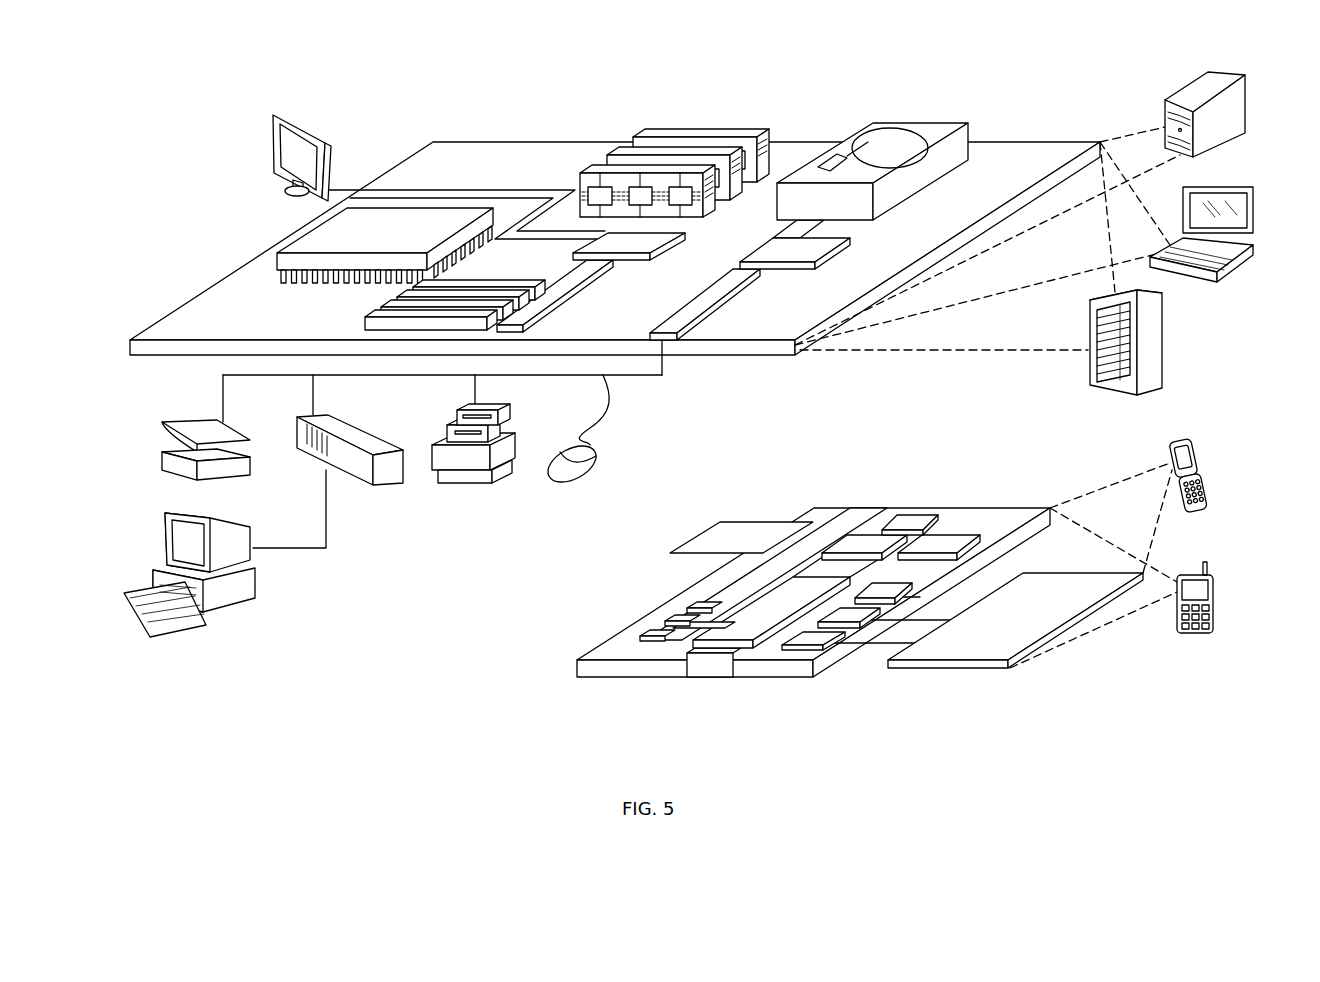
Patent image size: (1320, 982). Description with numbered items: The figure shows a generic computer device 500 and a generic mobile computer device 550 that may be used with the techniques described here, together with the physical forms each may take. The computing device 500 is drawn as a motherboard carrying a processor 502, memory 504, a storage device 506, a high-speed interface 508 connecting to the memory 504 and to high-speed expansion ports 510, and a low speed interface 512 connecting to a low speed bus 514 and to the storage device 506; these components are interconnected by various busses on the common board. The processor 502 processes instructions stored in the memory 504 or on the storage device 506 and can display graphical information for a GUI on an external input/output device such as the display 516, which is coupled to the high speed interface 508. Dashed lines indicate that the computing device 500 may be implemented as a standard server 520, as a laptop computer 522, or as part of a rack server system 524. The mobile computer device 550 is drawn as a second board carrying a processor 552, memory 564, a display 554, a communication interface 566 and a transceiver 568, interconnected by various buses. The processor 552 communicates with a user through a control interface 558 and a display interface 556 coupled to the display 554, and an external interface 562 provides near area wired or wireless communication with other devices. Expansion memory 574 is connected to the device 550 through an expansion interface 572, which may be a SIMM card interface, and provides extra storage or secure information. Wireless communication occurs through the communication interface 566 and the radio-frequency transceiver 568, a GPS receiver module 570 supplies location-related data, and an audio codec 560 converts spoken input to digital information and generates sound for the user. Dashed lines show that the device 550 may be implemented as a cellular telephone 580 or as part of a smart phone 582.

The computing device 500 is at (390, 94).
The processor 502 is at (302, 234).
The memory 504 is at (702, 135).
The storage device 506 is at (912, 121).
The high-speed interface 508 is at (641, 242).
The high-speed expansion ports 510 is at (385, 306).
The low speed interface 512 is at (770, 247).
The low speed bus 514 is at (668, 327).
The display 516 is at (281, 114).
The standard server 520 is at (1185, 95).
The laptop computer 522 is at (1233, 185).
The rack server system 524 is at (1162, 344).
The mobile computer device 550 is at (531, 689).
The processor 552 is at (745, 618).
The display 554 is at (1050, 588).
The display interface 556 is at (822, 639).
The control interface 558 is at (850, 614).
The audio codec 560 is at (886, 586).
The external interface 562 is at (710, 664).
The memory 564 is at (667, 618).
The communication interface 566 is at (863, 539).
The transceiver 568 is at (947, 538).
The GPS receiver module 570 is at (908, 517).
The expansion interface 572 is at (794, 522).
The expansion memory 574 is at (722, 521).
The cellular telephone 580 is at (1181, 441).
The smart phone 582 is at (1192, 575).